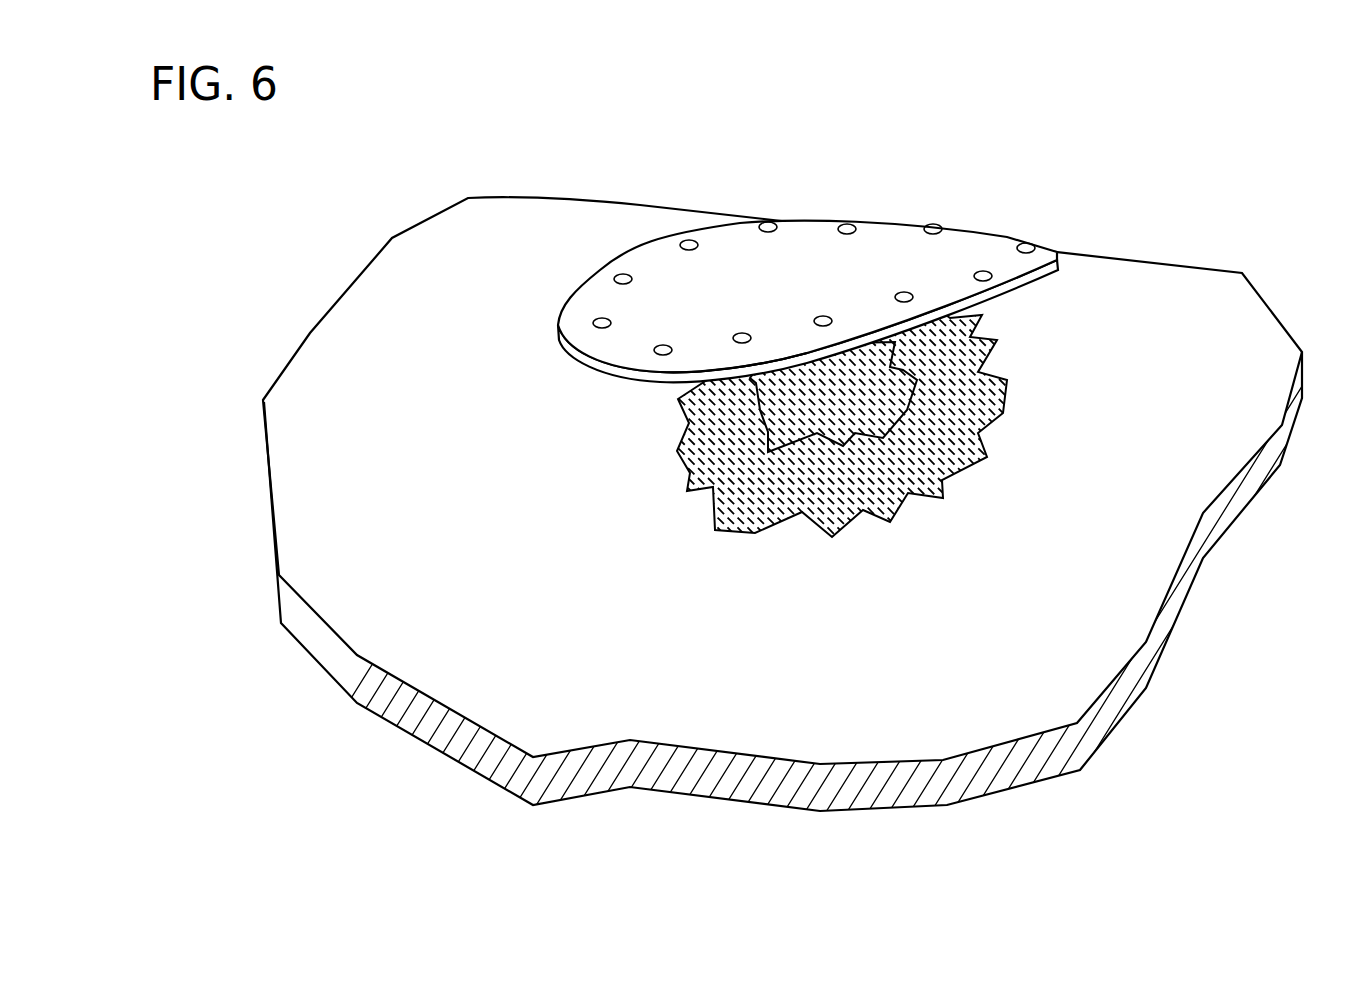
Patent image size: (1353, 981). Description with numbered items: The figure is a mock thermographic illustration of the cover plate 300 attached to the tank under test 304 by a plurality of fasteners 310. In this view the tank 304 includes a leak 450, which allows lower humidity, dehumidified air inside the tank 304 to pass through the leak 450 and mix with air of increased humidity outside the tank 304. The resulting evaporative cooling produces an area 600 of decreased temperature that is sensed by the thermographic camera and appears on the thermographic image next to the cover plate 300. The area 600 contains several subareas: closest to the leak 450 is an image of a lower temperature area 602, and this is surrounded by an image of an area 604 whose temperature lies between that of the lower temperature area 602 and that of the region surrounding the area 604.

The cover plate 300 is at (808, 241).
The fasteners 310 is at (770, 225).
The leak 450 is at (797, 357).
The tank under test 304 is at (1105, 255).
The area of decreased temperature 600 is at (1005, 445).
The lower temperature area 602 is at (903, 355).
The intermediate temperature area 604 is at (818, 510).